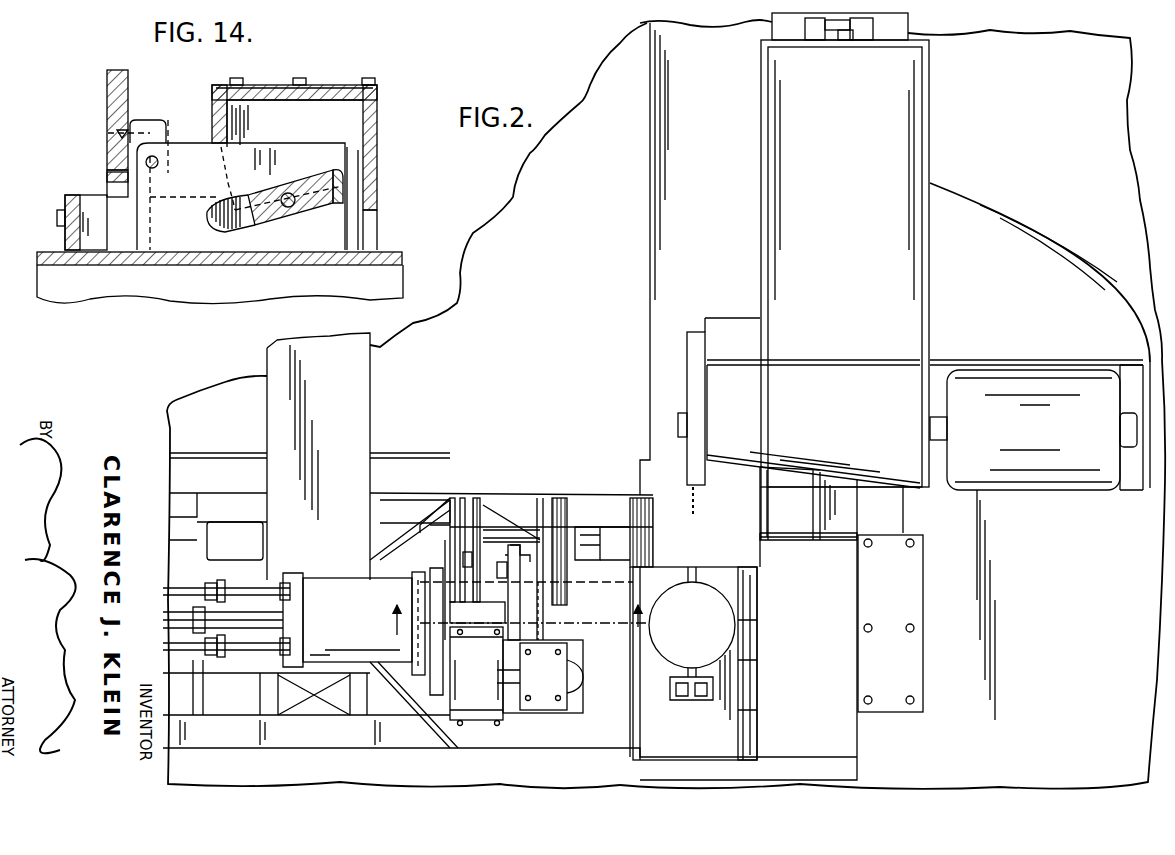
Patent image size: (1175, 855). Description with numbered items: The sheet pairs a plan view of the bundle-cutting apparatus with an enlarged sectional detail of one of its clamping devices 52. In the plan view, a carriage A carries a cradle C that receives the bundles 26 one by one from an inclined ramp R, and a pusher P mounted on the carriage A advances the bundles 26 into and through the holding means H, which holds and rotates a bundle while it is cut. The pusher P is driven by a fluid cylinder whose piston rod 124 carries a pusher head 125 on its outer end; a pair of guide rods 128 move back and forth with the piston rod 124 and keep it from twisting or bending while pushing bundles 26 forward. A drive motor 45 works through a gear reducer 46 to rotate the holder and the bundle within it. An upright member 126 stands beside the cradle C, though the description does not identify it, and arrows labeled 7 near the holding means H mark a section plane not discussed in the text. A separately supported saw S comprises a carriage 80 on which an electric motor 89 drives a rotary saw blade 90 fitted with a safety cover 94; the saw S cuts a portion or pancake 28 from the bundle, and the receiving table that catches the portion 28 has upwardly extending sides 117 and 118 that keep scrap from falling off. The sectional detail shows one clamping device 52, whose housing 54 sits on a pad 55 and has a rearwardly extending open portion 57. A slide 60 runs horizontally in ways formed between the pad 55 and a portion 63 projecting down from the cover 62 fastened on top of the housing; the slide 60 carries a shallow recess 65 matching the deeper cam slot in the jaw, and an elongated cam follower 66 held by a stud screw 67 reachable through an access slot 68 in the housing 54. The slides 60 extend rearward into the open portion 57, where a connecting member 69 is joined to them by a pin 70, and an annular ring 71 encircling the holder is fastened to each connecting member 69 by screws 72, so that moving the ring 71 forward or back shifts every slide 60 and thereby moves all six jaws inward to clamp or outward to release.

In FIG. 14, the clamping device 52 is at (272, 82).
In FIG. 2, the clamping device 52 is at (583, 535).
In FIG. 14, the housing 54 is at (377, 120).
In FIG. 14, the pad 55 is at (377, 259).
In FIG. 14, the rearwardly extending open portion 57 is at (90, 197).
In FIG. 14, the slide 60 is at (242, 185).
In FIG. 14, the cover 62 is at (317, 85).
In FIG. 14, the cover projection 63 is at (310, 110).
In FIG. 14, the shallow recess 65 is at (347, 182).
In FIG. 14, the cam follower 66 is at (252, 220).
In FIG. 14, the stud screw 67 is at (302, 218).
In FIG. 14, the access slot 68 is at (235, 210).
In FIG. 14, the connecting member 69 is at (161, 131).
In FIG. 14, the pin 70 is at (155, 157).
In FIG. 14, the annular ring 71 is at (128, 93).
In FIG. 2, the annular ring 71 is at (517, 548).
In FIG. 14, the screws 72 is at (108, 135).
In FIG. 2, the saw carriage 80 is at (910, 160).
In FIG. 2, the electric motor 89 is at (1015, 477).
In FIG. 2, the rotary saw blade 90 is at (695, 510).
In FIG. 2, the safety cover 94 is at (697, 332).
In FIG. 2, the table side 117 is at (745, 583).
In FIG. 2, the table side 118 is at (640, 580).
In FIG. 2, the piston rod 124 is at (223, 627).
In FIG. 2, the pusher head 125 is at (260, 655).
In FIG. 2, the pillar 126 is at (318, 456).
In FIG. 2, the guide rods 128 is at (240, 588).
In FIG. 2, the bundle 26 is at (373, 631).
In FIG. 2, the cut portion 28 is at (705, 593).
In FIG. 2, the drive motor 45 is at (553, 680).
In FIG. 2, the gear reducer 46 is at (487, 697).
In FIG. 2, the section view arrows 7 is at (514, 635).
In FIG. 2, the carriage A is at (167, 496).
In FIG. 2, the cradle C is at (280, 575).
In FIG. 2, the holding means H is at (612, 540).
In FIG. 2, the pusher P is at (185, 669).
In FIG. 2, the inclined ramp R is at (410, 530).
In FIG. 2, the saw S is at (705, 406).